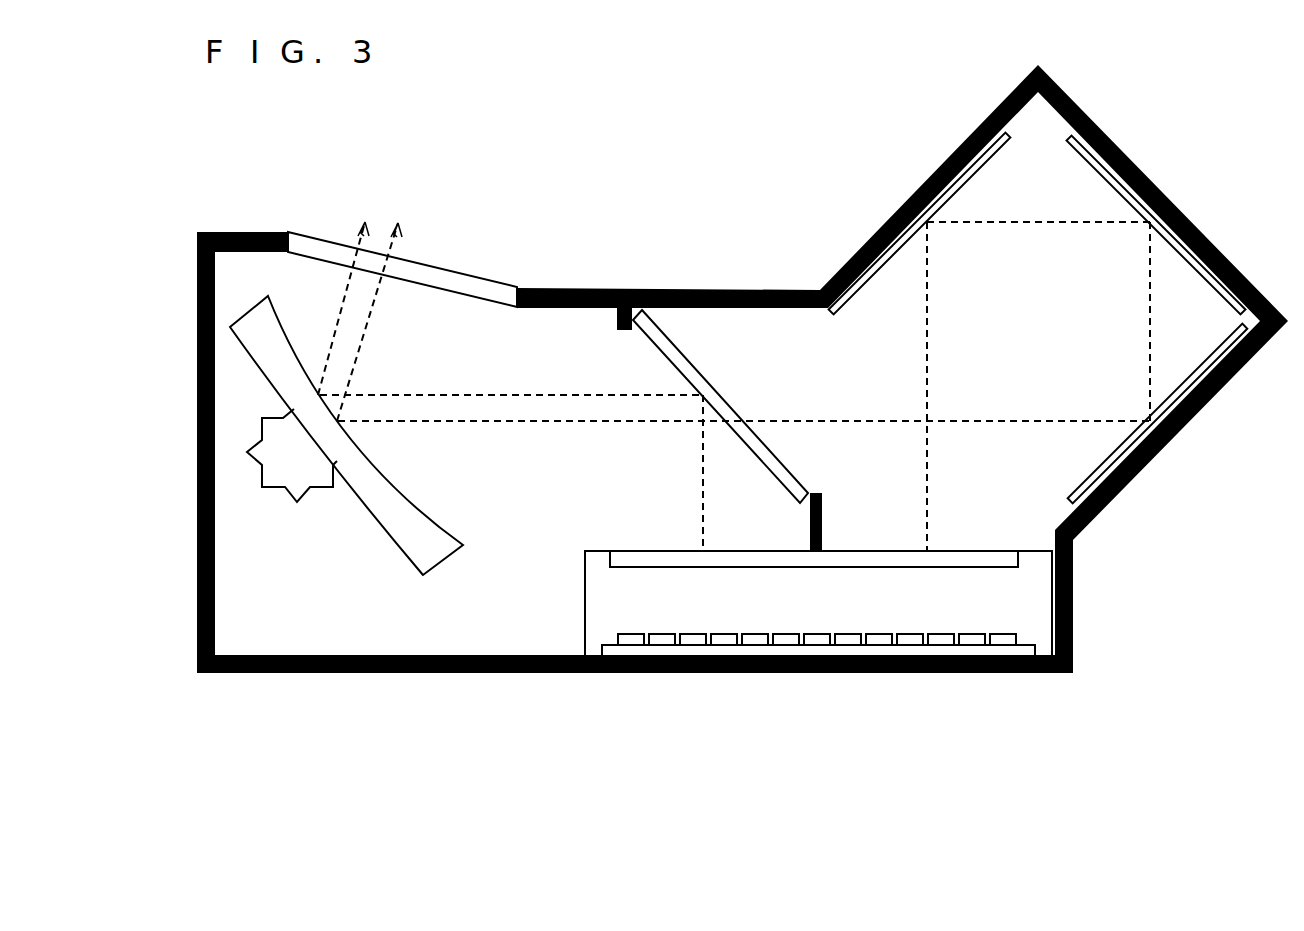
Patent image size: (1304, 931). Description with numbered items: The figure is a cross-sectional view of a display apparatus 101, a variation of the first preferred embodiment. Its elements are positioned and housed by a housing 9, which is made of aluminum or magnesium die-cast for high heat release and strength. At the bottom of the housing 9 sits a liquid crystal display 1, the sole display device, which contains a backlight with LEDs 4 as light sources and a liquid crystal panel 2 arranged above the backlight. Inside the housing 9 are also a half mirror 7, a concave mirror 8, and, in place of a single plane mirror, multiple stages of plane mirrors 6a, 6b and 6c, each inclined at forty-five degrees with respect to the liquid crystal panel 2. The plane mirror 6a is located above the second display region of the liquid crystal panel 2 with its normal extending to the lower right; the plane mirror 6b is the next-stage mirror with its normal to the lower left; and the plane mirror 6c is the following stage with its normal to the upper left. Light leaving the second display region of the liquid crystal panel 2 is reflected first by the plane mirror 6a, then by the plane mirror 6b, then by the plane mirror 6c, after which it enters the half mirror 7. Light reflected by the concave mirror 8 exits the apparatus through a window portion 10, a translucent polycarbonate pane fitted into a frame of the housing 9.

The display apparatus 101 is at (243, 176).
The housing 9 is at (197, 452).
The window portion 10 is at (457, 285).
The concave mirror 8 is at (412, 548).
The half mirror 7 is at (670, 345).
The plane mirror 6a is at (937, 203).
The plane mirror 6b is at (1146, 207).
The plane mirror 6c is at (1172, 410).
The liquid crystal display 1 is at (819, 599).
The liquid crystal panel 2 is at (1013, 563).
The LEDs 4 is at (1012, 641).